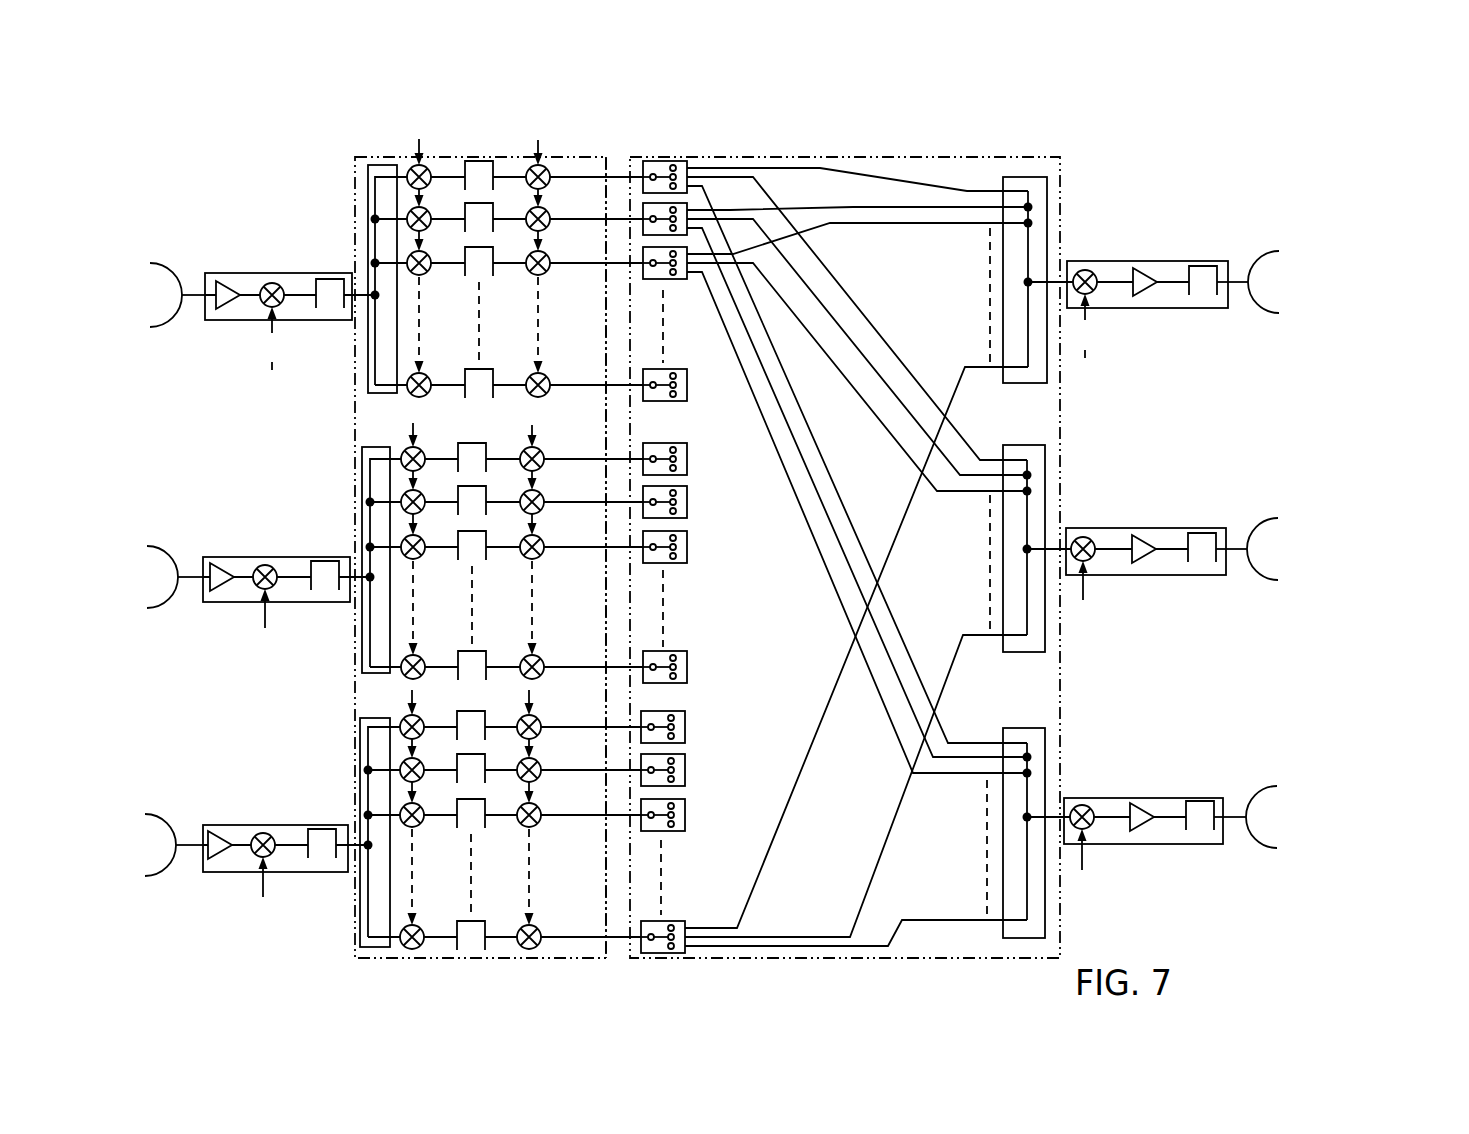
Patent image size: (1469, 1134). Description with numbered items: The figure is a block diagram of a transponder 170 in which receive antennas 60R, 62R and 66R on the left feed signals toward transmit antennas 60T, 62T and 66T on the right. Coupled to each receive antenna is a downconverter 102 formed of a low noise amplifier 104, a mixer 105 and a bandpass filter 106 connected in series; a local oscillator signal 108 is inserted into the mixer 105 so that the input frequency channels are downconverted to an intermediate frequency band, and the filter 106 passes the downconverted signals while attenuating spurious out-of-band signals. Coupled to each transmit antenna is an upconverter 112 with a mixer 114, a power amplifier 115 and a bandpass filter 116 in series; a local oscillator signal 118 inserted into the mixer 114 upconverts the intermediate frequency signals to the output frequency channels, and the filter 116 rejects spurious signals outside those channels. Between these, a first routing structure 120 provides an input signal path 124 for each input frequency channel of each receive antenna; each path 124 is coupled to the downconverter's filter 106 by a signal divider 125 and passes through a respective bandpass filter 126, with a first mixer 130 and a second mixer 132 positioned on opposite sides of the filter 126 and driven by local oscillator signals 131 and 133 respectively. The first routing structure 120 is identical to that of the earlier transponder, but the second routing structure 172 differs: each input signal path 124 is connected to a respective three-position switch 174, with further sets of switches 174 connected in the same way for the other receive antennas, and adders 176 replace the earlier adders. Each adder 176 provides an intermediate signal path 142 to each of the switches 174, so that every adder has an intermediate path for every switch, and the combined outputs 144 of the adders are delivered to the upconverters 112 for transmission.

The receive antenna 60R is at (157, 263).
The receive antenna 62R is at (157, 547).
The receive antenna 66R is at (155, 815).
The transmit antenna 60T is at (1270, 252).
The transmit antenna 62T is at (1270, 520).
The transmit antenna 66T is at (1270, 788).
The downconverter 102 is at (249, 214).
The low noise amplifier 104 is at (225, 275).
The mixer 105 is at (275, 280).
The bandpass filter 106 is at (332, 280).
The local oscillator signal 108 is at (272, 602).
The upconverter 112 is at (1182, 198).
The mixer 114 is at (1083, 268).
The power amplifier 115 is at (1141, 268).
The bandpass filter 116 is at (1200, 266).
The local oscillator signal 118 is at (1087, 582).
The first routing structure 120 is at (342, 385).
The input signal path 124 is at (607, 160).
The signal divider 125 is at (368, 190).
The bandpass filter 126 is at (472, 160).
The first mixer 130 is at (397, 167).
The local oscillator signal 131 is at (419, 139).
The second mixer 132 is at (549, 166).
The local oscillator signal 133 is at (538, 140).
The intermediate signal path 142 is at (868, 158).
The combiner 144 is at (1058, 278).
The transponder 170 is at (1262, 354).
The second routing structure 172 is at (1075, 385).
The three-position switch 174 is at (665, 160).
The adder 176 is at (1040, 172).